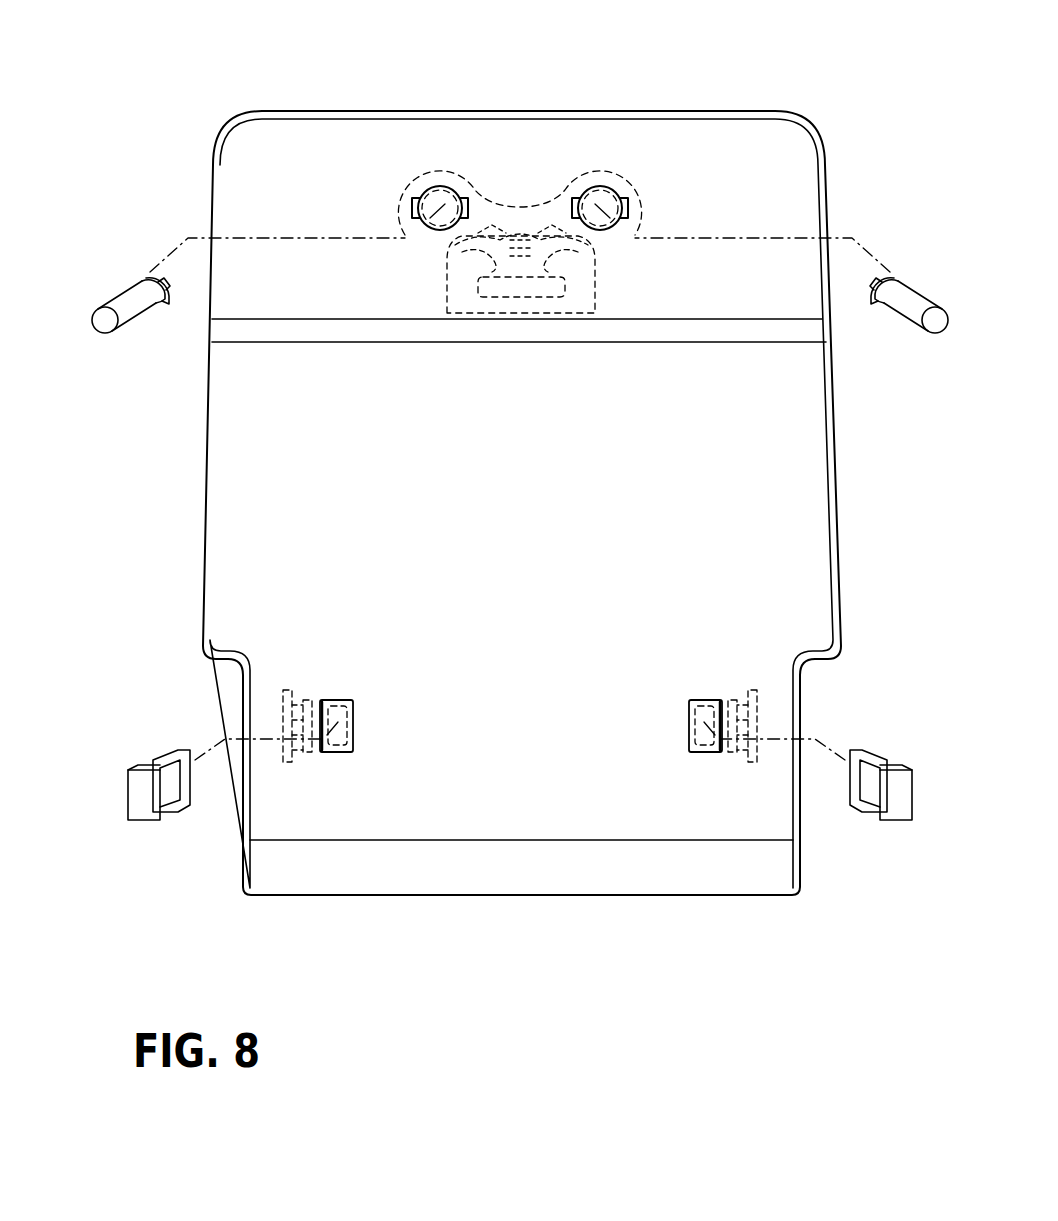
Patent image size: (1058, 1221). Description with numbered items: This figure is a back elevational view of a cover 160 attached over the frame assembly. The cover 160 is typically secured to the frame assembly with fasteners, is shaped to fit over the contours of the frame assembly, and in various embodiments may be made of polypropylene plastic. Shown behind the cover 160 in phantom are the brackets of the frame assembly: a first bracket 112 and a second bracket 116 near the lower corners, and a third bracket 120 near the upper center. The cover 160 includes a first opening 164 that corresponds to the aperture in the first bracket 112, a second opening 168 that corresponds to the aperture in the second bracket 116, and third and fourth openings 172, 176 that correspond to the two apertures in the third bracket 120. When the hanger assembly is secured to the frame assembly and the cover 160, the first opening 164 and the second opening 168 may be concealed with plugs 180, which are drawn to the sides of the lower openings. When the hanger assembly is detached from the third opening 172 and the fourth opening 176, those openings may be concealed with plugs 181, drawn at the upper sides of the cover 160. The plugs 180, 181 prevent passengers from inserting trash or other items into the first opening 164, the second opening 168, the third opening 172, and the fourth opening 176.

The first bracket 112 is at (312, 714).
The second bracket 116 is at (738, 712).
The third bracket 120 is at (521, 225).
The cover 160 is at (275, 457).
The first opening 164 is at (338, 752).
The second opening 168 is at (703, 752).
The third opening 172 is at (440, 186).
The fourth opening 176 is at (600, 186).
The plugs 180 is at (172, 752).
The plugs 181 is at (118, 306).